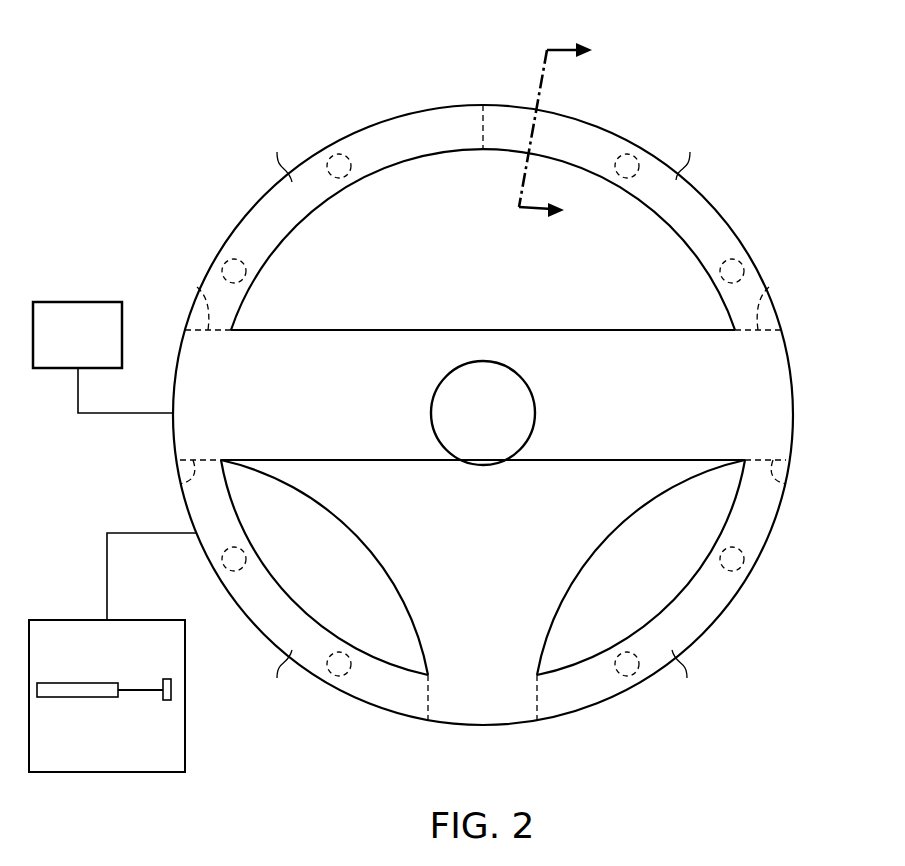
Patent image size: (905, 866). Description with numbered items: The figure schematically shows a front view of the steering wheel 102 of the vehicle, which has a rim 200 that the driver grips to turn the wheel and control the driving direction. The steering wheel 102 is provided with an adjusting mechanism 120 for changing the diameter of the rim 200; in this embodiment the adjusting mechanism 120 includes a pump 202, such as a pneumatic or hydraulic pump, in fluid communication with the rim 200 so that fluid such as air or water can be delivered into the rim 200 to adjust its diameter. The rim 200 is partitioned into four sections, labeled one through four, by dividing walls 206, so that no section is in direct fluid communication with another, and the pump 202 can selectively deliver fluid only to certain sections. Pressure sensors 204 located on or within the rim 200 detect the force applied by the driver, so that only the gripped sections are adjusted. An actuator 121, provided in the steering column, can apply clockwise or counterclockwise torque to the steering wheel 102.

The steering wheel 102 is at (497, 374).
The rim 200 is at (412, 108).
The pump 202 is at (78, 302).
The pressure sensors 204 is at (483, 417).
The dividing walls 206 is at (482, 415).
The adjusting mechanism 120 is at (103, 494).
The actuator 121 is at (107, 772).